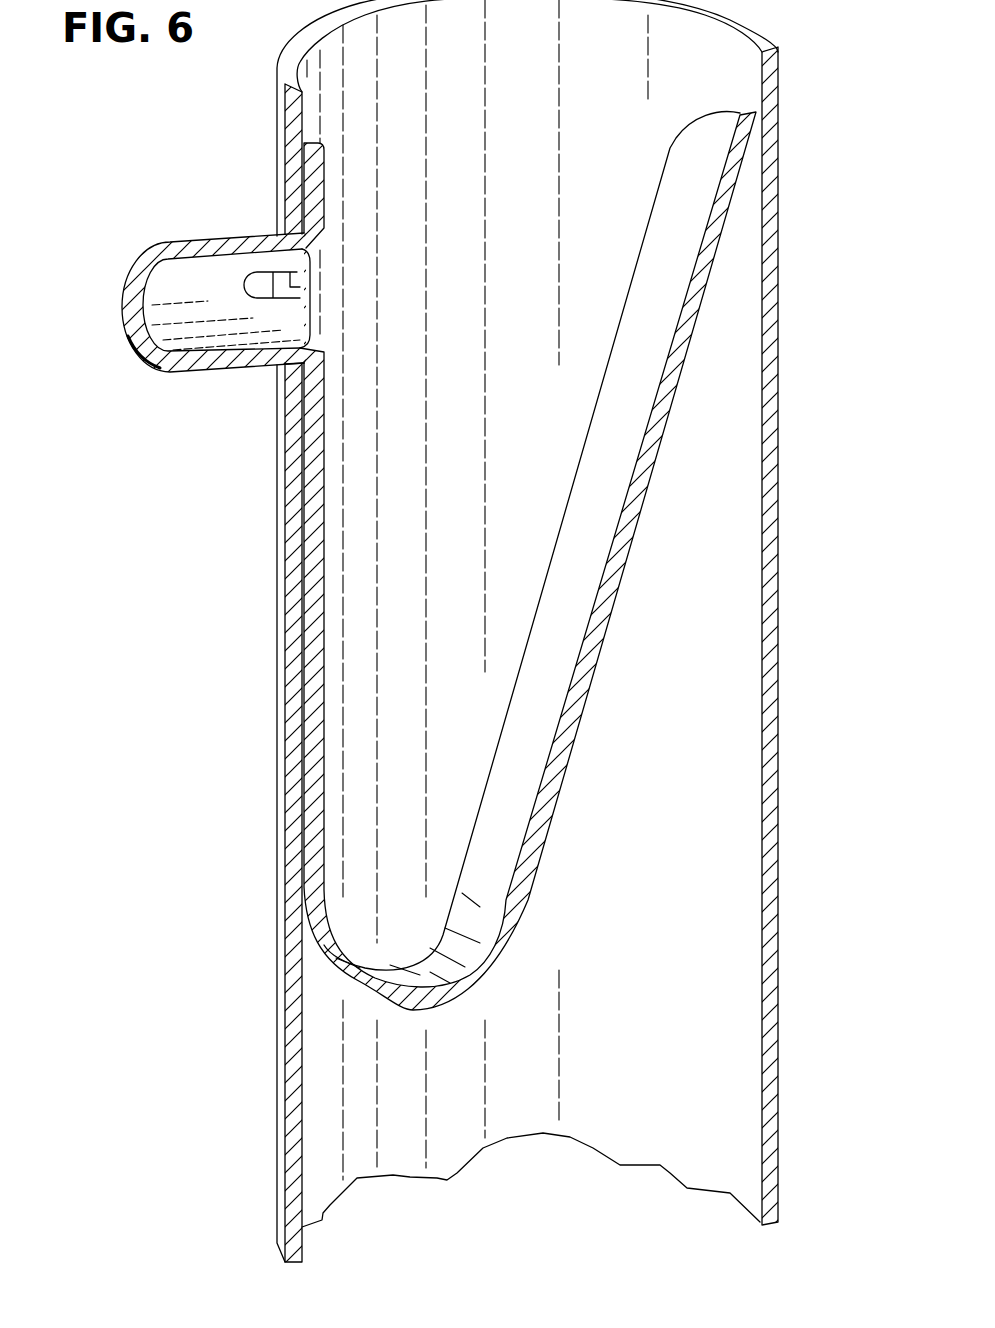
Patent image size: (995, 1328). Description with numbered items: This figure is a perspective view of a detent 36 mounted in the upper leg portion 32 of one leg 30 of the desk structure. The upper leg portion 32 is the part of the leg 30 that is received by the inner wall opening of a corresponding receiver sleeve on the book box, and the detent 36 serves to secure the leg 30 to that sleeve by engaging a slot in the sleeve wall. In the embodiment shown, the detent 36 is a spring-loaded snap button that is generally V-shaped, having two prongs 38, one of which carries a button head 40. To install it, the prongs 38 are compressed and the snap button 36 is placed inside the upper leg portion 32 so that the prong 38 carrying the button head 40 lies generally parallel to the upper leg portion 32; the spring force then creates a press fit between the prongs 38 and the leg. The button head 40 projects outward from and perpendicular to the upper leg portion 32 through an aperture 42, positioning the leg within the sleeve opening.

The leg 30 is at (288, 1104).
The upper leg portion 32 is at (770, 265).
The detent 36 is at (450, 947).
The prong 38 is at (318, 609).
The button head 40 is at (147, 242).
The aperture 42 is at (286, 363).